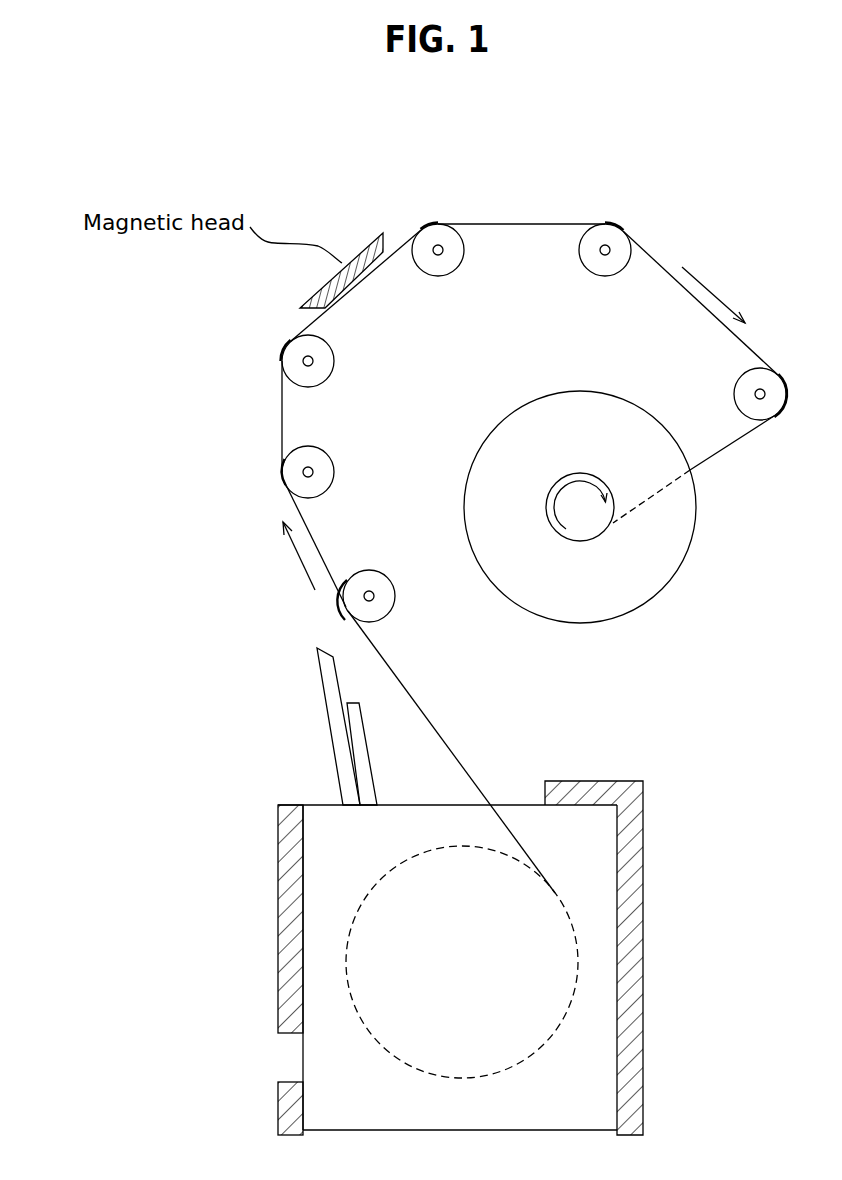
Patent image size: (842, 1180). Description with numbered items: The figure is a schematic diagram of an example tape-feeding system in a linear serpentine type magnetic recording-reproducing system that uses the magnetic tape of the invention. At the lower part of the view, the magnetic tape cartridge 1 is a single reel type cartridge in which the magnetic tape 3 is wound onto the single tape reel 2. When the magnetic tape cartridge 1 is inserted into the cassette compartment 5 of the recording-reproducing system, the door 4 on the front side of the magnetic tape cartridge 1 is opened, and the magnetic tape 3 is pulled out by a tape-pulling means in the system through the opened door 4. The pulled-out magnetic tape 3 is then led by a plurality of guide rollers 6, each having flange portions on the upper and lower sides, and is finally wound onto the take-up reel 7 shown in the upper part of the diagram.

The magnetic tape cartridge 1 is at (588, 1048).
The tape reel 2 is at (560, 937).
The magnetic tape 3 is at (430, 720).
The door 4 is at (342, 728).
The cassette compartment 5 is at (632, 782).
The guide roller 6 is at (287, 483).
The take-up reel 7 is at (514, 452).